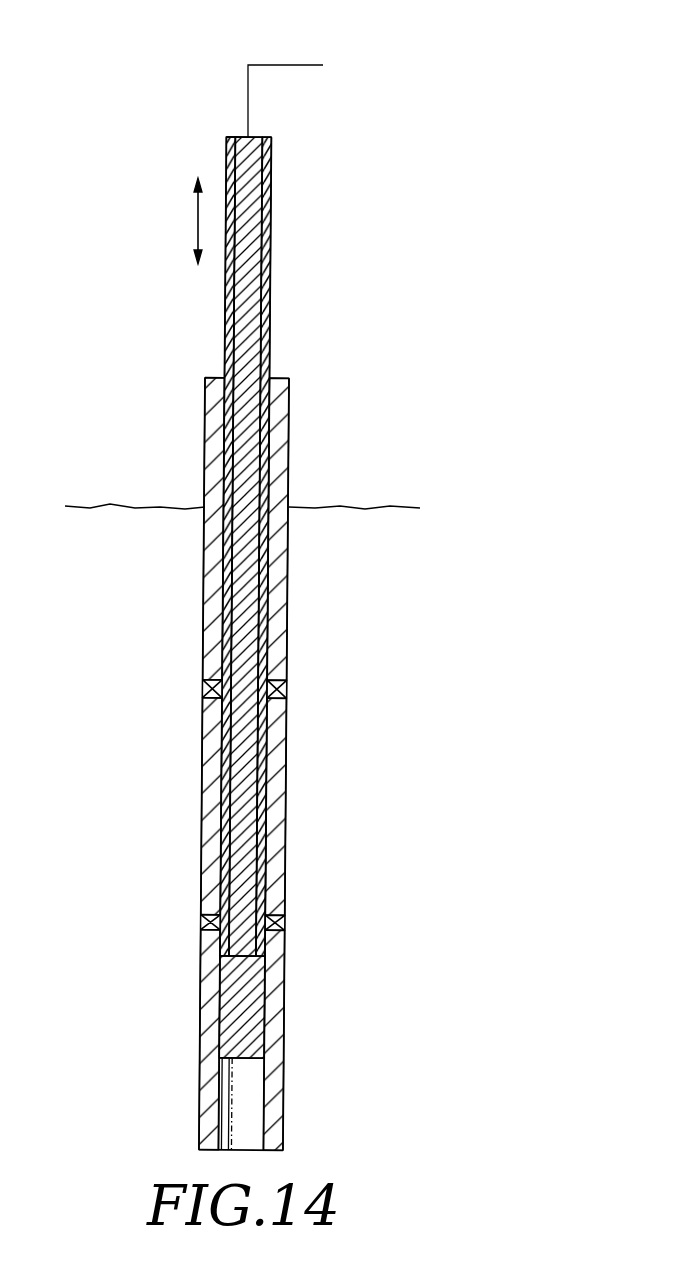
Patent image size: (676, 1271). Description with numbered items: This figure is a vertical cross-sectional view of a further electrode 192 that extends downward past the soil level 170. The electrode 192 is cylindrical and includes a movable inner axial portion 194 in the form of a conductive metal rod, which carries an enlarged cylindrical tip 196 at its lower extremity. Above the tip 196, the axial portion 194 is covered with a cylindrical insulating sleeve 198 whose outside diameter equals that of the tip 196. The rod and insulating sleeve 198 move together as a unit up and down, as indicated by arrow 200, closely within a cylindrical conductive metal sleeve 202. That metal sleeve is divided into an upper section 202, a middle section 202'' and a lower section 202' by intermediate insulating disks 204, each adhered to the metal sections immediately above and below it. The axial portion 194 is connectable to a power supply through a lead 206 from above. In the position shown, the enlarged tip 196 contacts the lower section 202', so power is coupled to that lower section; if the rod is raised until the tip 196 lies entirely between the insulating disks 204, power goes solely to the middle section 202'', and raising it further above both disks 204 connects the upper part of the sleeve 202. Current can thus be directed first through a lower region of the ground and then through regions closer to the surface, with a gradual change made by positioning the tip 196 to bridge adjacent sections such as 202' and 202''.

The soil level 170 is at (135, 504).
The electrode 192 is at (182, 644).
The inner axial portion 194 is at (245, 546).
The enlarged cylindrical tip 196 is at (242, 1007).
The insulating sleeve 198 is at (245, 546).
The arrow 200 is at (195, 225).
The conductive metal sleeve 202 is at (244, 764).
The lower section 202' is at (242, 1040).
The middle section 202'' is at (244, 807).
The insulating disks 204 is at (244, 805).
The power supply lead 206 is at (276, 63).